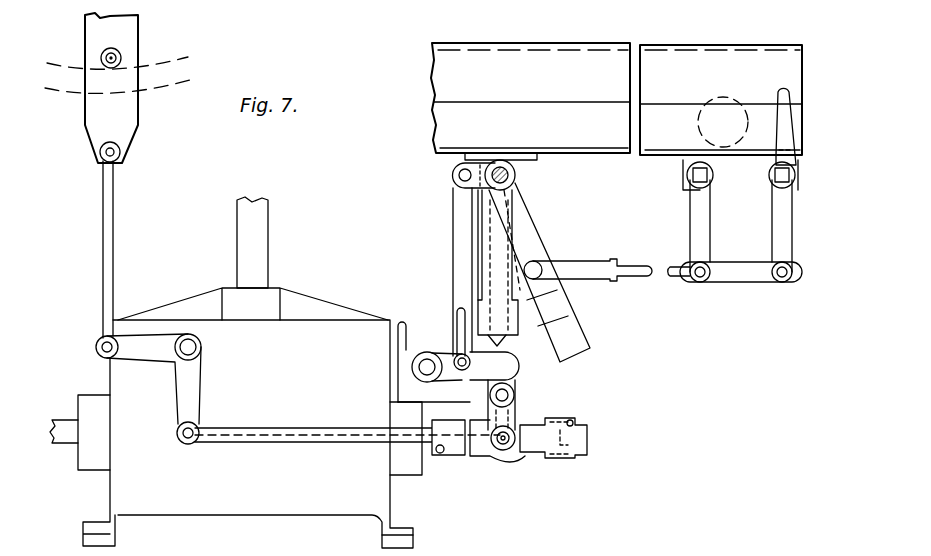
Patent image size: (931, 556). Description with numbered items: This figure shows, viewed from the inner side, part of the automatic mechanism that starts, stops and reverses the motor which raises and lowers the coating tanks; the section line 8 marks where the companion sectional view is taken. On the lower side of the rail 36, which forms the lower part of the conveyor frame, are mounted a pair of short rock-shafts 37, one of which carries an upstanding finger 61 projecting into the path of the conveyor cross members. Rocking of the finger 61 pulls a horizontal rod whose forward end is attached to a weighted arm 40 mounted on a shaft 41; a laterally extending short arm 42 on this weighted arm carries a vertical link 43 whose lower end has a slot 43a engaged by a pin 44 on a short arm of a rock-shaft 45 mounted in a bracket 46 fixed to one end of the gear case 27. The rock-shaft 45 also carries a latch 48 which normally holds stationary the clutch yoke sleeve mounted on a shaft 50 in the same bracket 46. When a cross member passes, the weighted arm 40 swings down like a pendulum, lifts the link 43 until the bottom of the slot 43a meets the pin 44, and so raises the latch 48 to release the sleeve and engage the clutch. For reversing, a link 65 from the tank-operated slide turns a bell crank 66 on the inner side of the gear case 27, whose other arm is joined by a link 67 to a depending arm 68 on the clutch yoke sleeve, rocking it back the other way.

The section line 8 is at (633, 43).
The gear case 27 is at (236, 372).
The rail 36 is at (530, 101).
The rock-shafts 37 is at (712, 188).
The weighted arm 40 is at (535, 244).
The shaft 41 is at (503, 170).
The short arm 42 is at (478, 187).
The vertical link 43 is at (455, 250).
The slot 43a is at (460, 310).
The pin 44 is at (455, 354).
The rock-shaft 45 is at (412, 367).
The bracket 46 is at (405, 350).
The latch 48 is at (512, 372).
The shaft 50 is at (510, 399).
The upstanding finger 61 is at (779, 98).
The link 65 is at (112, 248).
The bell crank 66 is at (199, 396).
The link 67 is at (327, 431).
The depending arm 68 is at (515, 420).